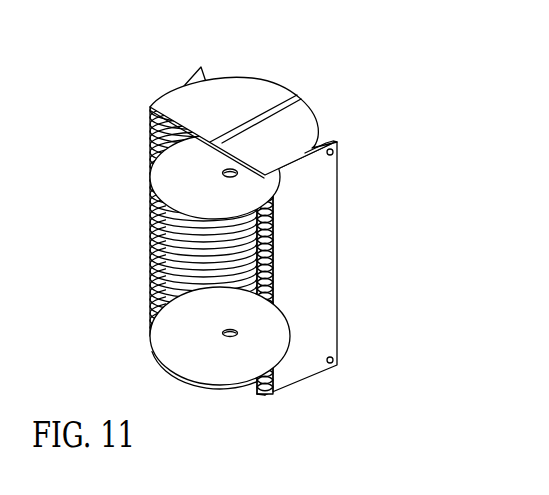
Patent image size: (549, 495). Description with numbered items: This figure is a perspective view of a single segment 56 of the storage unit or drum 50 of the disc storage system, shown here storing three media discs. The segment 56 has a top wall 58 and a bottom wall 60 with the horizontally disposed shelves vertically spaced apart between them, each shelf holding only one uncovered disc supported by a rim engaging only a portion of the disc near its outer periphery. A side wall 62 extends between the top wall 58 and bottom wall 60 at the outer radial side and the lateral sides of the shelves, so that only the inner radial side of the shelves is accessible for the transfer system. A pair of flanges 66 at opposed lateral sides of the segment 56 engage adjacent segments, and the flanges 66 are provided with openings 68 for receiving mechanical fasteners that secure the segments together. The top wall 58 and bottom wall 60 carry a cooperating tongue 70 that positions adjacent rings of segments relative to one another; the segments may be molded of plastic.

The segment 56 is at (189, 40).
The top wall 58 is at (222, 93).
The tongue 70 is at (270, 103).
The side wall 62 is at (322, 140).
The openings 68 is at (333, 160).
The flanges 66 is at (184, 80).
The storage unit or drum 50 is at (148, 255).
The bottom wall 60 is at (262, 392).